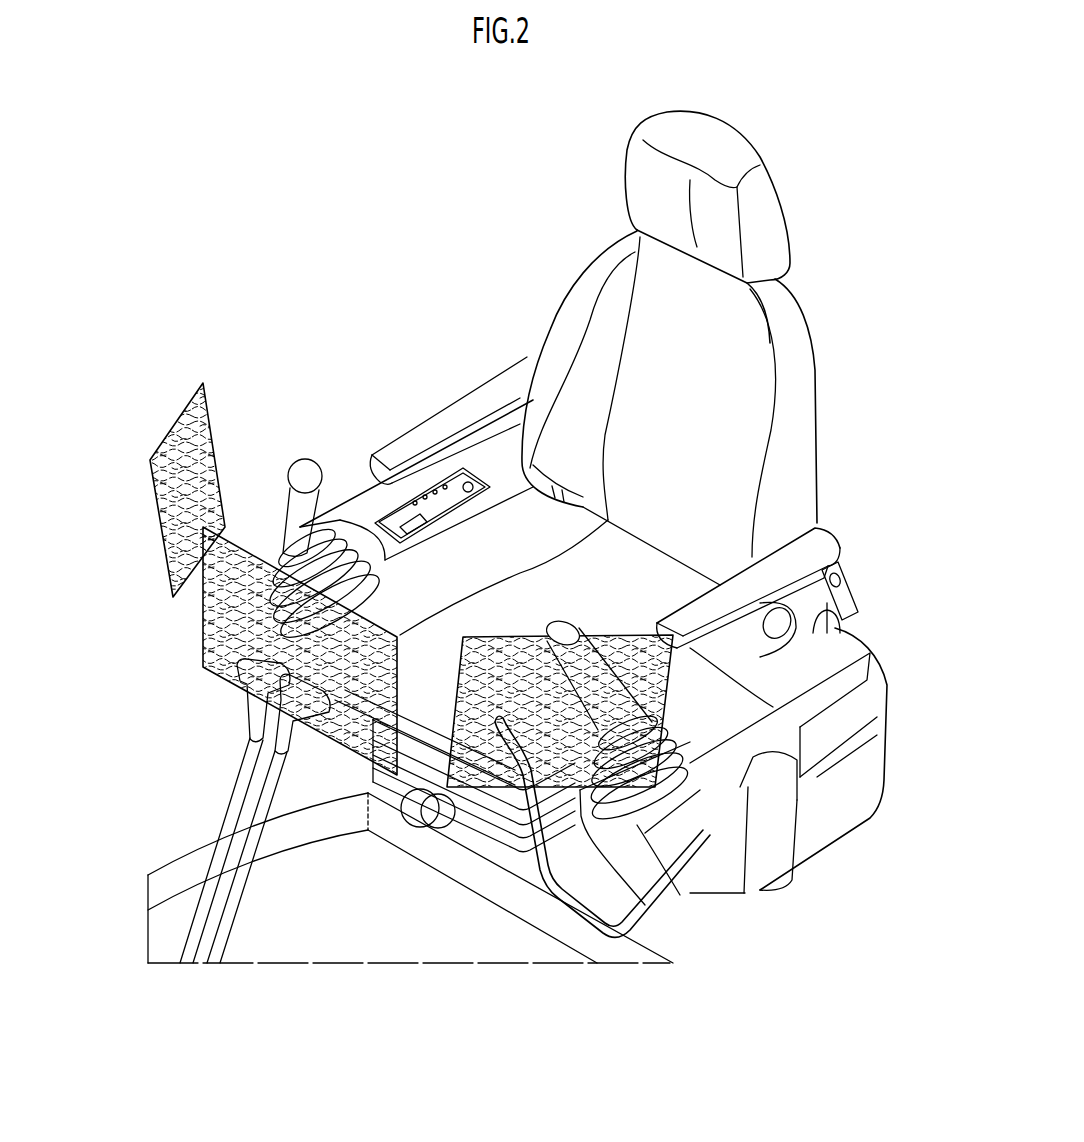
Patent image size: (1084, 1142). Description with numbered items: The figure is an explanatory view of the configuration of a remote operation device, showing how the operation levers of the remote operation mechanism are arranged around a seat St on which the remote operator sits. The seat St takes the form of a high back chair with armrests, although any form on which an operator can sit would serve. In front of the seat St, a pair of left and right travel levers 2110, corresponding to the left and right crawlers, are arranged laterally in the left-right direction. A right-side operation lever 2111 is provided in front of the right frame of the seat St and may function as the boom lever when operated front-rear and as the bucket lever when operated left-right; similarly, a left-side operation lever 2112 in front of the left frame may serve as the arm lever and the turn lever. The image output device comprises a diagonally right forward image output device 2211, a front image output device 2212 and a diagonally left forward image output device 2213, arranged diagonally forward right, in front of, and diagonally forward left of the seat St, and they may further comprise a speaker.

The seat St is at (396, 206).
The travel levers 2110 is at (208, 803).
The right-side operation lever 2111 is at (297, 444).
The left-side operation lever 2112 is at (551, 608).
The diagonally right forward image output device 2211 is at (150, 508).
The front image output device 2212 is at (196, 618).
The diagonally left forward image output device 2213 is at (680, 680).